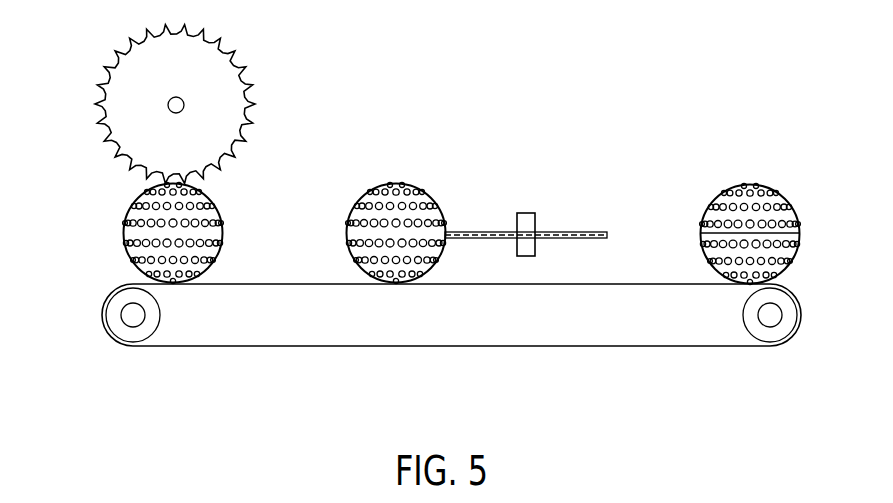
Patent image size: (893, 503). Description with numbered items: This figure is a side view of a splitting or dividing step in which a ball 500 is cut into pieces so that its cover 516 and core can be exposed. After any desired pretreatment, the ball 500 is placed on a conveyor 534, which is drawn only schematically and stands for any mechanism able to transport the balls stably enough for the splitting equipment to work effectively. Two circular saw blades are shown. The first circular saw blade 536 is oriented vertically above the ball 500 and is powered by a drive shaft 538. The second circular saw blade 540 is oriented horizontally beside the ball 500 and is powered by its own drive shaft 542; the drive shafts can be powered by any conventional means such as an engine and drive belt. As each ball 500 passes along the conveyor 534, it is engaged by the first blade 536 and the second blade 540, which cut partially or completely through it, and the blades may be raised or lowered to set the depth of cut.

The ball 500 is at (106, 192).
The cover 516 is at (221, 214).
The conveyor 534 is at (226, 356).
The first circular saw blade 536 is at (256, 108).
The drive shaft 538 is at (181, 96).
The second circular saw blade 540 is at (566, 232).
The drive shaft 542 is at (523, 212).